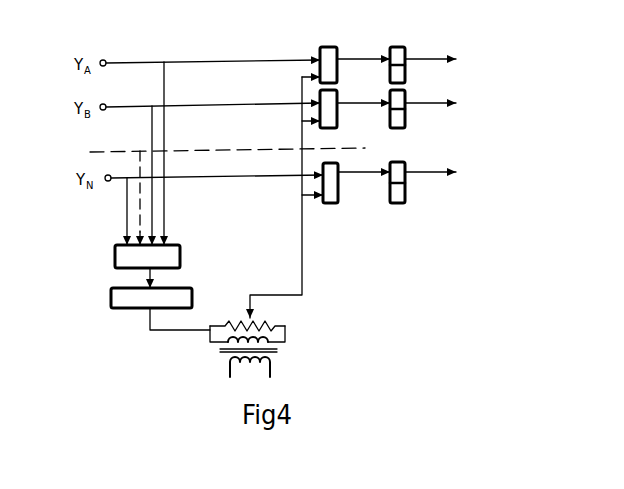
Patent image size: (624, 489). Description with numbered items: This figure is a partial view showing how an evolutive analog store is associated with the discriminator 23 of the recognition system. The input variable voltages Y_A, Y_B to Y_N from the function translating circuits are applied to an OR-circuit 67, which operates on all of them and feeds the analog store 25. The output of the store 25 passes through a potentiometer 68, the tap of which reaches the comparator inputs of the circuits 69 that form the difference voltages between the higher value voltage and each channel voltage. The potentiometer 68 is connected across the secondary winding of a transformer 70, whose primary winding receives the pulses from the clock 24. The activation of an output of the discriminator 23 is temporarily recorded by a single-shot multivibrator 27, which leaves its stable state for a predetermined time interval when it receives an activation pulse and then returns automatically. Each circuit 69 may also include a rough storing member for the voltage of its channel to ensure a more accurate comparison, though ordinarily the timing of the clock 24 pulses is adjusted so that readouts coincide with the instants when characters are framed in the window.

The discriminator 23 is at (213, 53).
The comparator circuit 69 is at (357, 19).
The single-shot multivibrator 27 is at (421, 218).
The OR-circuit 67 is at (187, 229).
The analog store 25 is at (104, 332).
The potentiometer 68 is at (269, 318).
The transformer 70 is at (264, 348).
The clock 24 is at (250, 372).